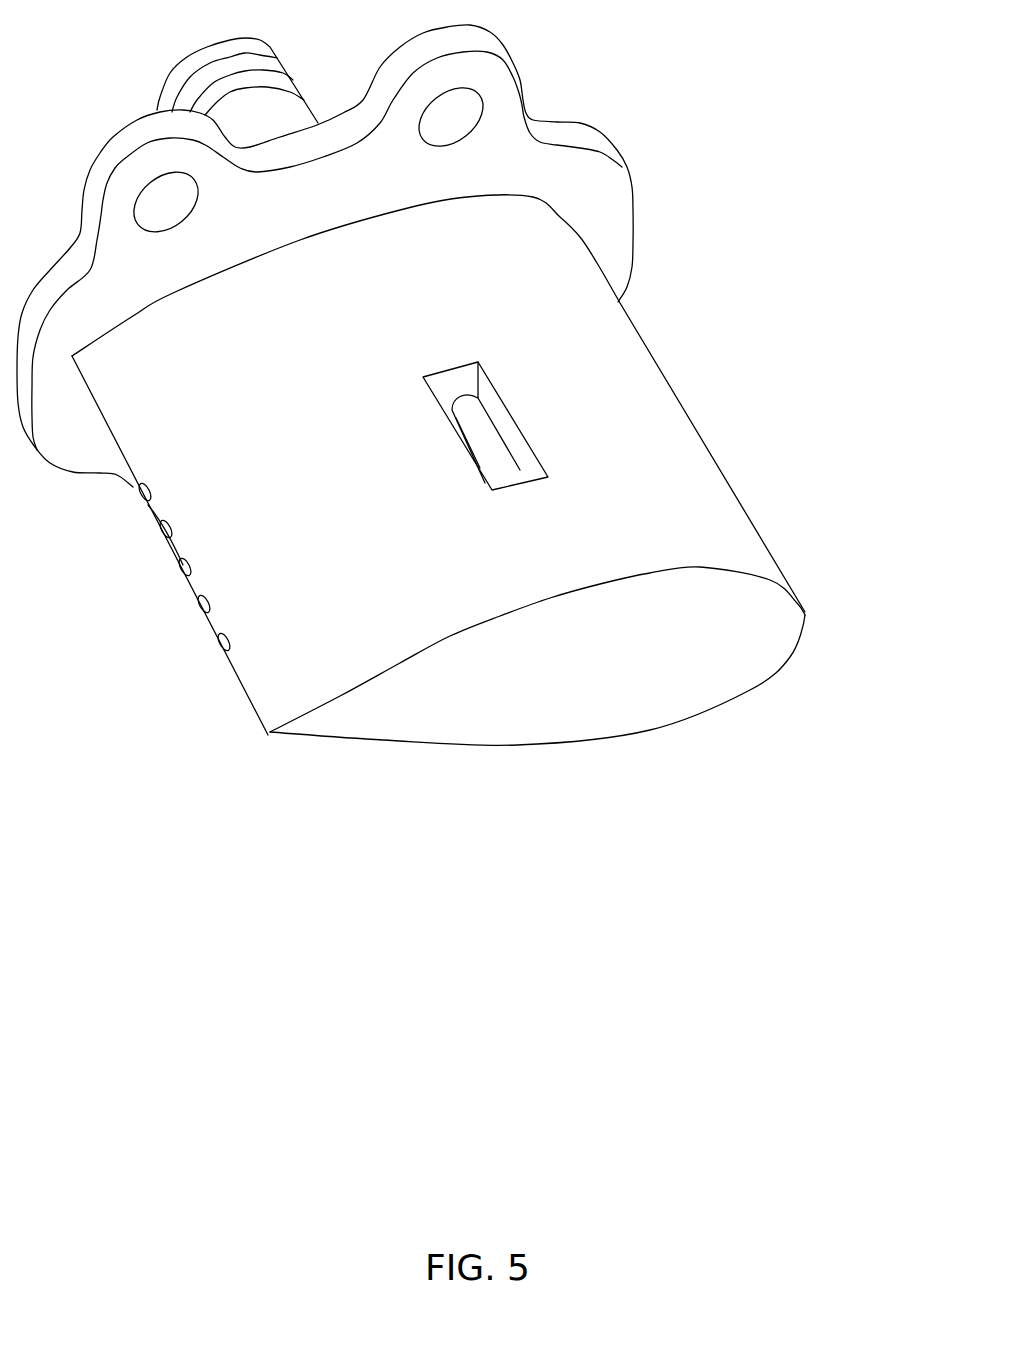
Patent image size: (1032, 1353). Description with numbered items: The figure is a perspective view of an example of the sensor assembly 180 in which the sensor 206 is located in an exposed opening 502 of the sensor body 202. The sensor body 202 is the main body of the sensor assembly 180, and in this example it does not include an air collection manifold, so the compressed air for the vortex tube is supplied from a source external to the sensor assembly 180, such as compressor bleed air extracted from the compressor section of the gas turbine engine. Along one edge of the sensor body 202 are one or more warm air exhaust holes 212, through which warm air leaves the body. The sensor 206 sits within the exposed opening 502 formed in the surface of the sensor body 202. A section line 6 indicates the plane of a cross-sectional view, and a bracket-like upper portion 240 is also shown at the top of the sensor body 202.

The sensor assembly 180 is at (741, 774).
The sensor body 202 is at (223, 375).
The sensor 206 is at (492, 452).
The warm air exhaust holes 212 is at (184, 567).
The mounting bracket 240 is at (935, 307).
The exposed opening 502 is at (453, 382).
The section line 6- 6 is at (240, 738).